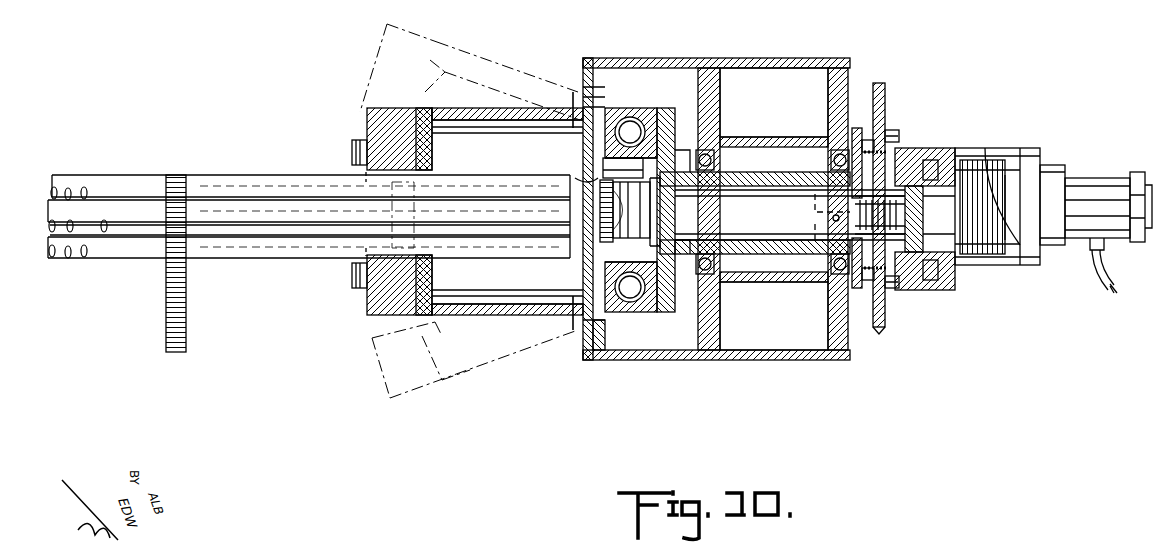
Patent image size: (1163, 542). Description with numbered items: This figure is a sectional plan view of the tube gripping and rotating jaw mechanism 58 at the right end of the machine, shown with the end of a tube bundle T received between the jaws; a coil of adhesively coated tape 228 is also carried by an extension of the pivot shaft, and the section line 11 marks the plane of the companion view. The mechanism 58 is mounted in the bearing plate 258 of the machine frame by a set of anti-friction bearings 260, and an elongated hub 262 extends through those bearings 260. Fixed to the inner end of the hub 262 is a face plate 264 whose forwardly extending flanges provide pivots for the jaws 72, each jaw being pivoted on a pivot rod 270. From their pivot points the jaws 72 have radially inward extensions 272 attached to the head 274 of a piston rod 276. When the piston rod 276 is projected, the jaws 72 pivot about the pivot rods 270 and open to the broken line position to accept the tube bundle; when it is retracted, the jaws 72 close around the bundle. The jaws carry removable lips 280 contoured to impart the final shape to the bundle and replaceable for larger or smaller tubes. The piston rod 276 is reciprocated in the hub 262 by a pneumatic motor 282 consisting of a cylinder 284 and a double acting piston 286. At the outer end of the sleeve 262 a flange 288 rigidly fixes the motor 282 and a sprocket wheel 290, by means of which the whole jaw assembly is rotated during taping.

The tube bundle T is at (246, 186).
The coil of adhesively coated tape 228 is at (186, 284).
The jaws 72 is at (463, 110).
The removable lips 280 is at (372, 292).
The section line 11 is at (565, 99).
The jaw mechanism 58 is at (763, 42).
The bearing plate 258 is at (828, 100).
The anti-friction bearings 260 is at (828, 262).
The elongated hub 262 is at (732, 180).
The pivot rods 270 is at (631, 116).
The face plate 264 is at (668, 108).
The extension 272 is at (612, 162).
The head 274 is at (598, 218).
The piston rod 276 is at (760, 214).
The flange 288 is at (858, 140).
The sprocket wheel 290 is at (885, 102).
The cylinder 284 is at (942, 266).
The pneumatic motor 282 is at (974, 143).
The double acting piston 286 is at (1004, 248).